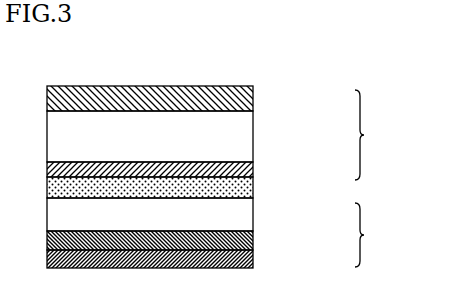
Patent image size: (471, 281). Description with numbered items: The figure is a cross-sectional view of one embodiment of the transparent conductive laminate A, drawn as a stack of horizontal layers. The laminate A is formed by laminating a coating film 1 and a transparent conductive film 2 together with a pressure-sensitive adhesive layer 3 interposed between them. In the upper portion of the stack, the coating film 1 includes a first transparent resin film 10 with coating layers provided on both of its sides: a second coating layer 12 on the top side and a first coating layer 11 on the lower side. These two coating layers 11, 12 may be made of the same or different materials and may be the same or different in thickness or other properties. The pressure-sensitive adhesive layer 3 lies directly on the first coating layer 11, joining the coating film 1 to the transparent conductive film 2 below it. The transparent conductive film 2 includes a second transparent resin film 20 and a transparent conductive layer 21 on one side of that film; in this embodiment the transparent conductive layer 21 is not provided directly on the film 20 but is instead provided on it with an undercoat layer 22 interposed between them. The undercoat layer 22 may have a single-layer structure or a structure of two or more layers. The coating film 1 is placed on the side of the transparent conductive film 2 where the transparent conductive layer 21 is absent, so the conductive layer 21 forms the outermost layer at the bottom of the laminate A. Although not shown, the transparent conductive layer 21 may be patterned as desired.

The second coating layer 12 is at (253, 99).
The first transparent resin film 10 is at (245, 139).
The first coating layer 11 is at (253, 170).
The pressure-sensitive adhesive layer 3 is at (253, 192).
The second transparent resin film 20 is at (245, 218).
The undercoat layer 22 is at (253, 246).
The transparent conductive layer 21 is at (253, 264).
The coating film 1 is at (371, 135).
The transparent conductive film 2 is at (370, 235).
The transparent conductive laminate A is at (385, 68).